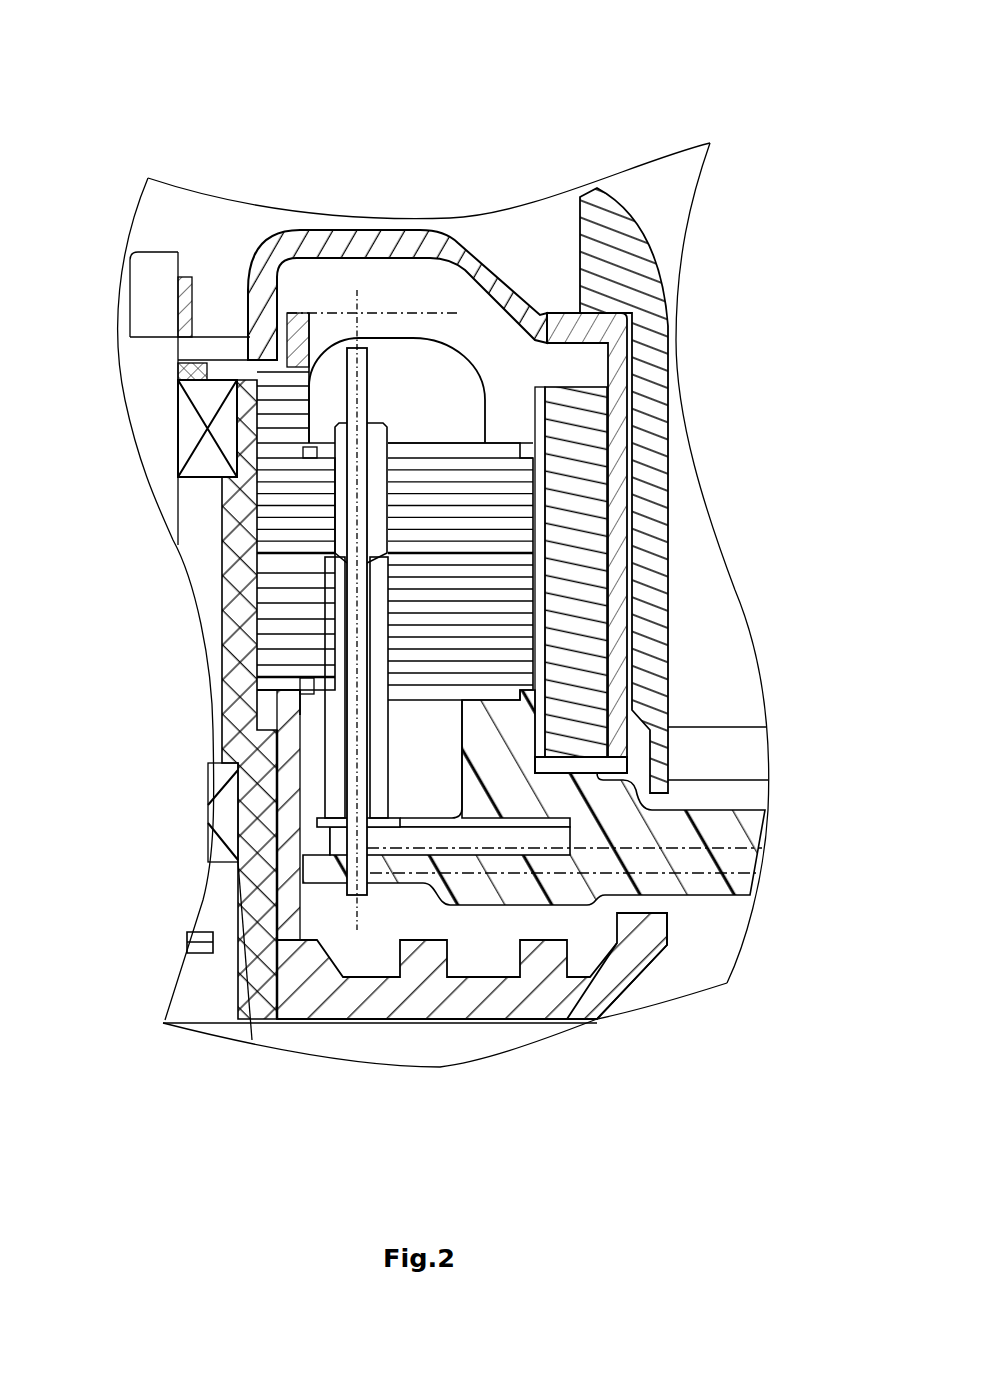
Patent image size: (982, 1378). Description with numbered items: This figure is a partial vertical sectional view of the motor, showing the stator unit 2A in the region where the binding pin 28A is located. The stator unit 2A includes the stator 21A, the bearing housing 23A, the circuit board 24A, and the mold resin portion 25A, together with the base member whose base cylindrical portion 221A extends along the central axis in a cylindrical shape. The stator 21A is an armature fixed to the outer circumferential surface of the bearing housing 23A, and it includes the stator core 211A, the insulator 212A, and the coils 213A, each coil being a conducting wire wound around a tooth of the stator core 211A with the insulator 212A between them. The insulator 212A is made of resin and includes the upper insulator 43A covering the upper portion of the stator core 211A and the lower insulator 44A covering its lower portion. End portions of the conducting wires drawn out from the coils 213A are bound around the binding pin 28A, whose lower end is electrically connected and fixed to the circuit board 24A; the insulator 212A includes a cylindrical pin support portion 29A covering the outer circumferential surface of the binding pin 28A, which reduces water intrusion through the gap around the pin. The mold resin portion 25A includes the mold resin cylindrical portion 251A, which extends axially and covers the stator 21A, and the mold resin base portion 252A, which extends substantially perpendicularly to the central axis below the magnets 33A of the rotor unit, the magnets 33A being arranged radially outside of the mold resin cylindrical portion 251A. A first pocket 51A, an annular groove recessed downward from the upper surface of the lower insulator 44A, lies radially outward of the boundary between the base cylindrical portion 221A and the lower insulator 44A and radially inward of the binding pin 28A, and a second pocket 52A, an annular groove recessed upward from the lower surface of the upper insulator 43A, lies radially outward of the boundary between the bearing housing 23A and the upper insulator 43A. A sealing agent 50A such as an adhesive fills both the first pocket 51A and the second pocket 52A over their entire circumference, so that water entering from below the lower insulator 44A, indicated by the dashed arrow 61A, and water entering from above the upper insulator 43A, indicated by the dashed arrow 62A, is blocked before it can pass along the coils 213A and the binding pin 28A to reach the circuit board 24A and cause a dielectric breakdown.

The stator unit 2A is at (555, 1058).
The stator 21A is at (512, 398).
The stator core 211A is at (457, 487).
The insulator 212A is at (530, 104).
The coils 213A is at (437, 385).
The upper insulator 43A is at (536, 340).
The lower insulator 44A is at (547, 560).
The dashed arrow 62A is at (277, 335).
The binding pin 28A is at (352, 410).
The magnets 33A is at (582, 570).
The second pocket 52A is at (306, 460).
The first pocket 51A is at (300, 684).
The sealing agent 50A is at (278, 728).
The bearing housing 23A is at (212, 865).
The base cylindrical portion 221A is at (278, 1018).
The dashed arrow 61A is at (288, 850).
The pin support portion 29A is at (378, 795).
The circuit board 24A is at (452, 837).
The mold resin portion 25A is at (553, 914).
The mold resin cylindrical portion 251A is at (668, 930).
The mold resin base portion 252A is at (705, 882).